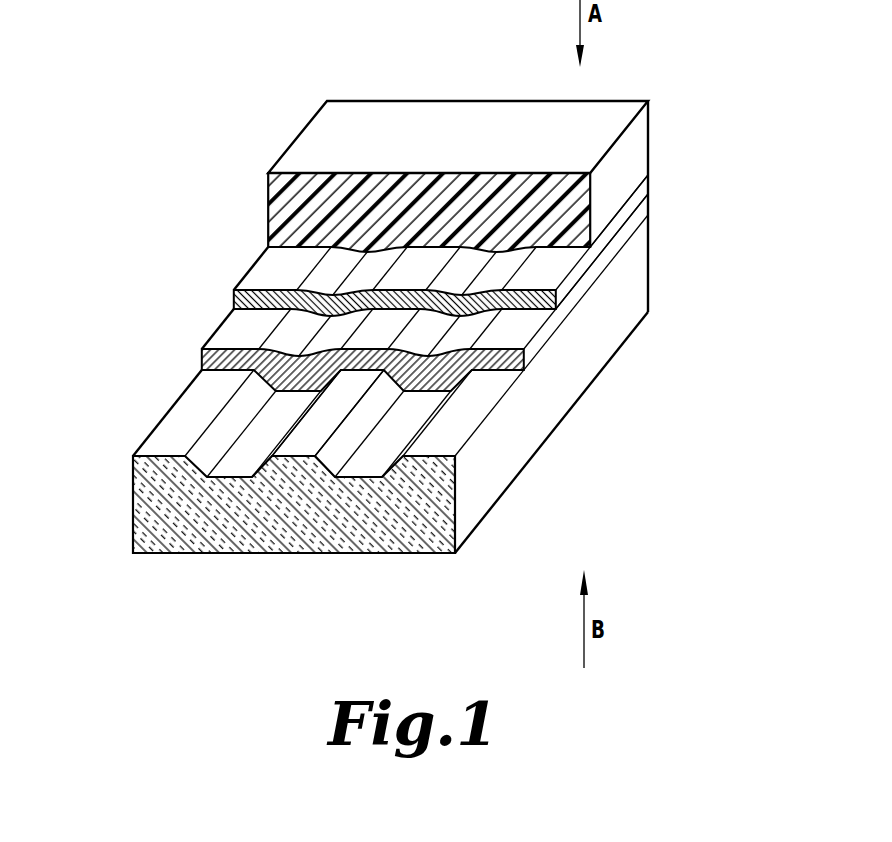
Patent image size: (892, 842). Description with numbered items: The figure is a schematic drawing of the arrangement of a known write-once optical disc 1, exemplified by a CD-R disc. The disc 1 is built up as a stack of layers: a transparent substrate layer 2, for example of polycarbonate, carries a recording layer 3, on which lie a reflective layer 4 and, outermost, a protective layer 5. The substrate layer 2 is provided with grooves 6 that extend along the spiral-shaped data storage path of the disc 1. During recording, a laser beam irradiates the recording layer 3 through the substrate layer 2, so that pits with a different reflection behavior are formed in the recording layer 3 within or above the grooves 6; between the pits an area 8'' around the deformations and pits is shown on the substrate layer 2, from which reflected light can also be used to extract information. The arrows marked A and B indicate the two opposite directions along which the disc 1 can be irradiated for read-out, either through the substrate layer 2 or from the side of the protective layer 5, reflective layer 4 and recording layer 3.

The disc 1 is at (418, 295).
The substrate layer 2 is at (142, 493).
The recording layer 3 is at (208, 362).
The reflective layer 4 is at (243, 296).
The protective layer 5 is at (453, 112).
The grooves 6 is at (225, 478).
The area around deformations and pits 8'' is at (328, 444).